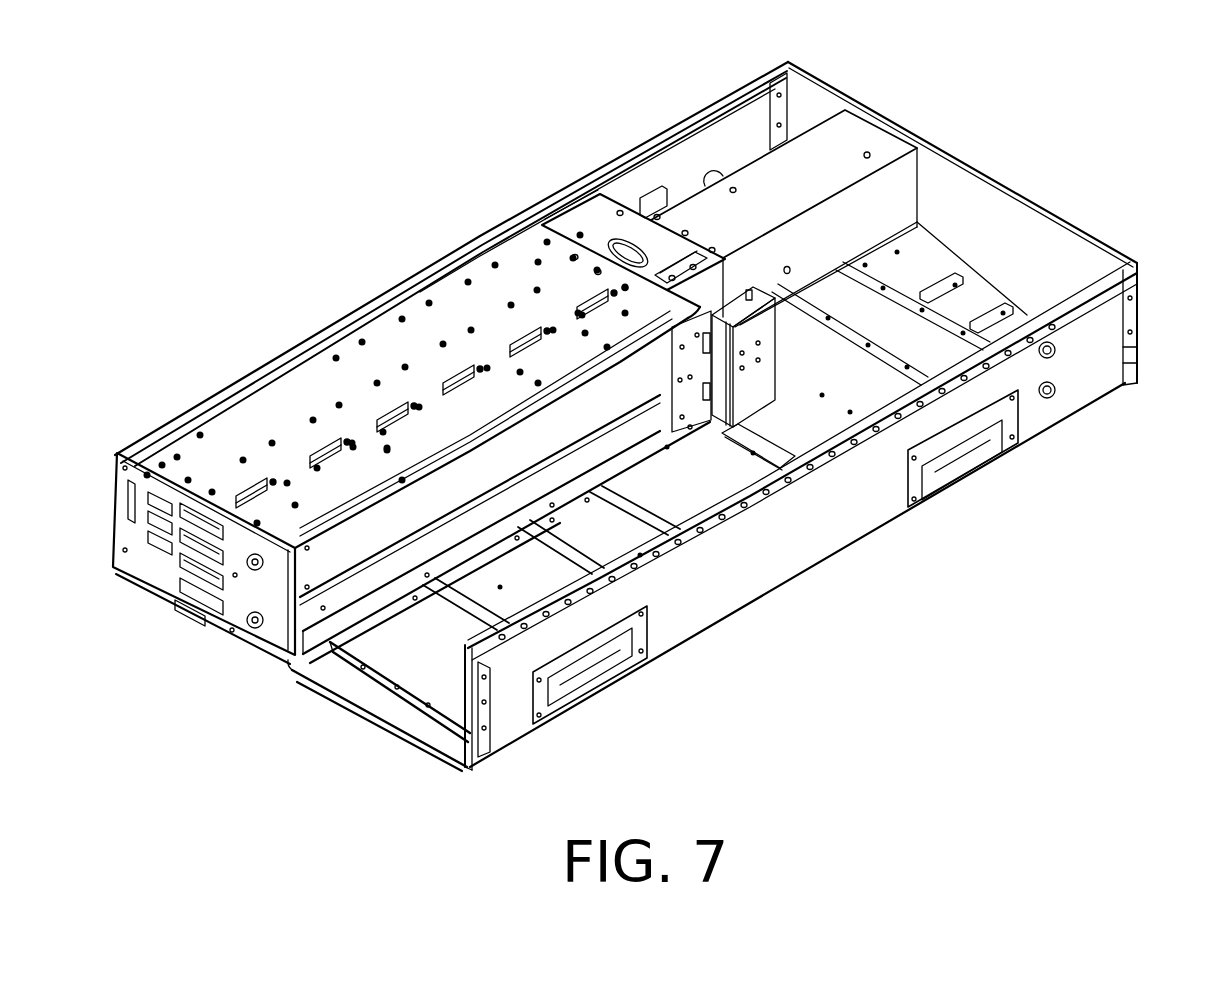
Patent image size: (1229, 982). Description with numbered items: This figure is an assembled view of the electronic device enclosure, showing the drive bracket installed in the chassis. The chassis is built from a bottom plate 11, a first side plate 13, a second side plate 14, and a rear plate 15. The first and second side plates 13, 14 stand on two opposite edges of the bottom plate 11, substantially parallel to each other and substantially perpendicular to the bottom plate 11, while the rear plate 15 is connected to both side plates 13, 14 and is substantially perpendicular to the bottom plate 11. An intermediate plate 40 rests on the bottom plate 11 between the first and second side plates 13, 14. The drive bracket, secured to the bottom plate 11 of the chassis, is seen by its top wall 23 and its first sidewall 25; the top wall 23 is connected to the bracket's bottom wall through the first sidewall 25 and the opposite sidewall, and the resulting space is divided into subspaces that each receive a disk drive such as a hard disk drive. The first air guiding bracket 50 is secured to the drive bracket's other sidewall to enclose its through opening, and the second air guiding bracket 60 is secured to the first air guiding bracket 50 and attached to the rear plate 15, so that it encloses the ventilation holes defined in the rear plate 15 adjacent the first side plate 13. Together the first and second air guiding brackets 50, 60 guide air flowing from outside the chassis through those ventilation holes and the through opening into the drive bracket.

The bottom plate 11 is at (420, 673).
The first side plate 13 is at (684, 157).
The second side plate 14 is at (1083, 390).
The rear plate 15 is at (1015, 230).
The top wall 23 is at (320, 377).
The first sidewall 25 is at (232, 610).
The intermediate plate 40 is at (348, 602).
The first air guiding bracket 50 is at (613, 227).
The second air guiding bracket 60 is at (843, 138).